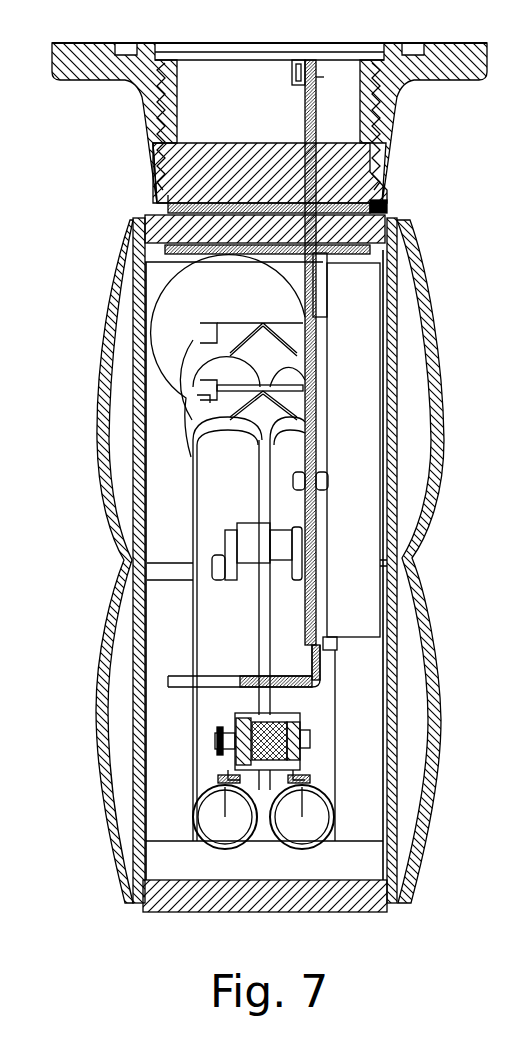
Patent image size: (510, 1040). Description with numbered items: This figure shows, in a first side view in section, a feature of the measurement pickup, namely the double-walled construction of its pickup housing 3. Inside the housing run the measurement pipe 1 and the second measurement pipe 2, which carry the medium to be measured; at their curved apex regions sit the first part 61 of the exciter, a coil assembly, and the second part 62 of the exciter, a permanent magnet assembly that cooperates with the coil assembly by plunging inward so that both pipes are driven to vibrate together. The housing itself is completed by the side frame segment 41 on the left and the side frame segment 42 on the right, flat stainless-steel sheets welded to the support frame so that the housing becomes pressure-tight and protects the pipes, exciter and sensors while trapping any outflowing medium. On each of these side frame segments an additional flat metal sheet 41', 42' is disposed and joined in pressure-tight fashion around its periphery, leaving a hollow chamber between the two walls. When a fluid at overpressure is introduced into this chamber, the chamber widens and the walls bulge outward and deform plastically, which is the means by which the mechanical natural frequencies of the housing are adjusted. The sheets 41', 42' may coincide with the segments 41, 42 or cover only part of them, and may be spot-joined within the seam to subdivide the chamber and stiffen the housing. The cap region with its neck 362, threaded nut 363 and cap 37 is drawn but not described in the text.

The measurement pipe 1 is at (192, 633).
The second measurement pipe 2 is at (317, 783).
The pickup housing 3 is at (402, 228).
The cap 37 is at (388, 202).
The left side frame segment 41 is at (96, 560).
The additional flat metal sheet 41' is at (91, 561).
The right side frame segment 42 is at (442, 560).
The additional flat metal sheet 42' is at (452, 561).
The first part of the exciter 61 is at (240, 717).
The second part of the exciter 62 is at (297, 735).
The cap neck 362 is at (150, 203).
The threaded nut 363 is at (345, 175).